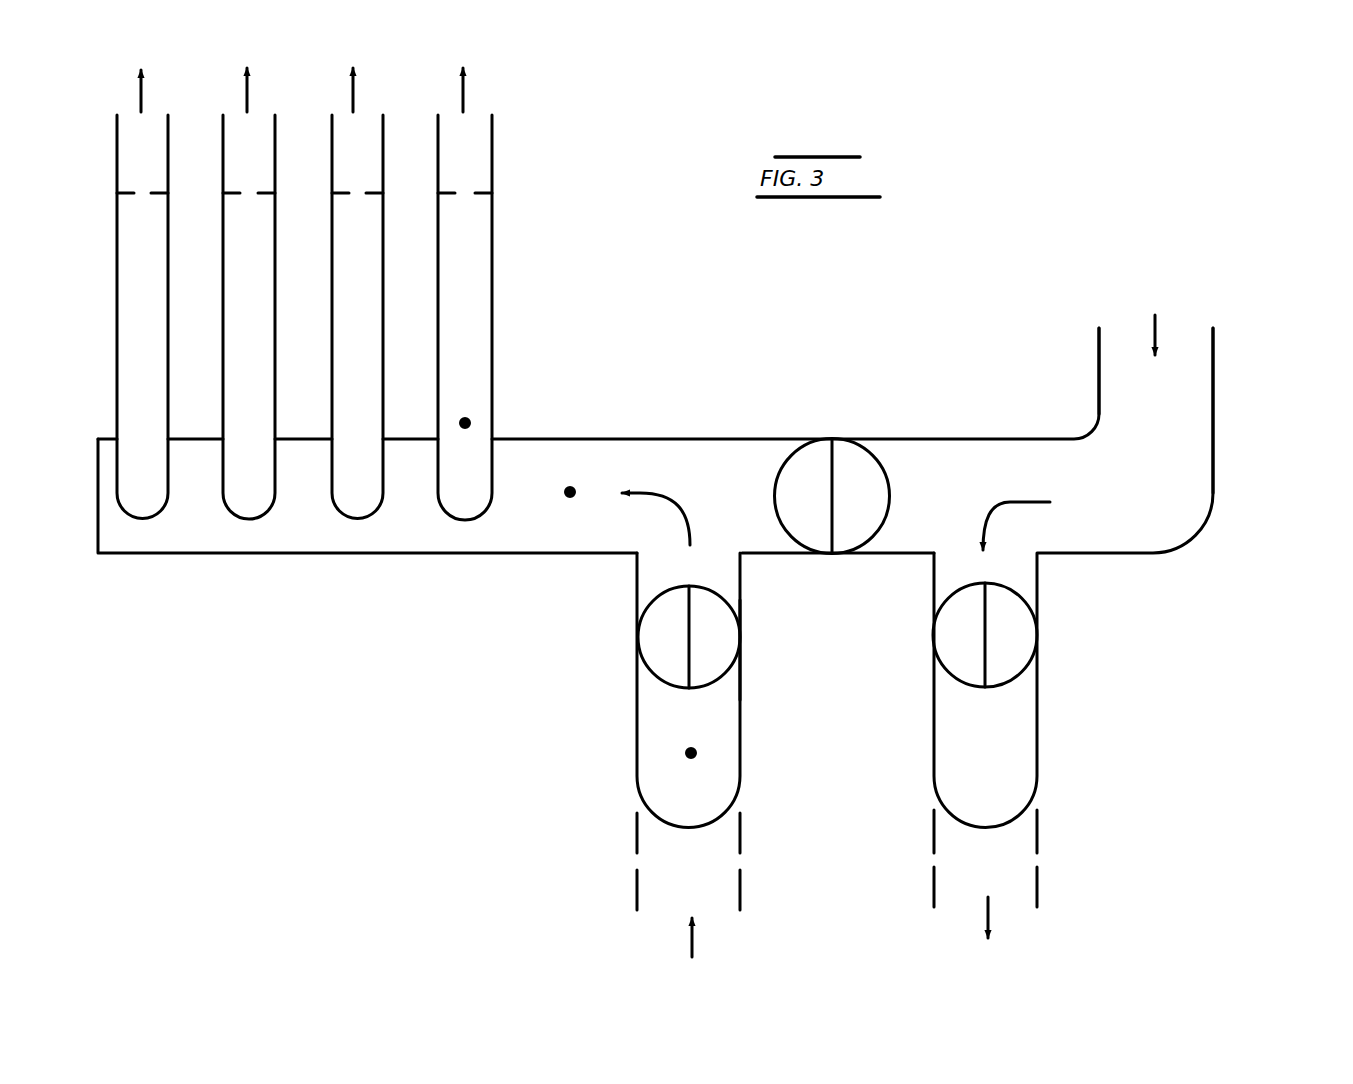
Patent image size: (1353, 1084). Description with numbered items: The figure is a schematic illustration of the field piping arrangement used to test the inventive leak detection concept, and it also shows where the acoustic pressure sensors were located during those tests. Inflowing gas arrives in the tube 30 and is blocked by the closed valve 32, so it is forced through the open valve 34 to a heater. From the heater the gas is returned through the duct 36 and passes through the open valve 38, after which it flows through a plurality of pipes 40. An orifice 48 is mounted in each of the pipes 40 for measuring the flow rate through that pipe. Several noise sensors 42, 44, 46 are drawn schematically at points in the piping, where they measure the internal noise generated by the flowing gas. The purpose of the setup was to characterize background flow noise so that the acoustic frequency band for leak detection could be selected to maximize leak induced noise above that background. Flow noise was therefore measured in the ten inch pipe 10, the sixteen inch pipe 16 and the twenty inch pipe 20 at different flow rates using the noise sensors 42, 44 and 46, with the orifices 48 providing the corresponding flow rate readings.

The 10 inch pipe 10 is at (337, 350).
The 16 inch pipe 16 is at (740, 705).
The 20 inch pipe 20 is at (632, 438).
The tube 30 is at (1099, 368).
The valve 32 is at (855, 438).
The valve 34 is at (1038, 602).
The duct 36 is at (637, 712).
The valve 38 is at (732, 602).
The pipes 40 is at (153, 520).
The noise sensor 42 is at (691, 753).
The noise sensor 44 is at (570, 492).
The noise sensor 46 is at (465, 423).
The orifices 48 is at (157, 193).